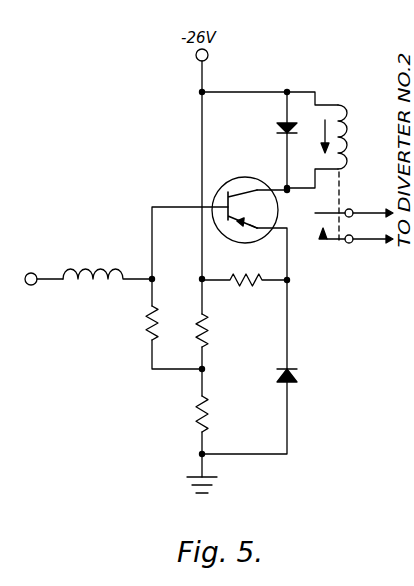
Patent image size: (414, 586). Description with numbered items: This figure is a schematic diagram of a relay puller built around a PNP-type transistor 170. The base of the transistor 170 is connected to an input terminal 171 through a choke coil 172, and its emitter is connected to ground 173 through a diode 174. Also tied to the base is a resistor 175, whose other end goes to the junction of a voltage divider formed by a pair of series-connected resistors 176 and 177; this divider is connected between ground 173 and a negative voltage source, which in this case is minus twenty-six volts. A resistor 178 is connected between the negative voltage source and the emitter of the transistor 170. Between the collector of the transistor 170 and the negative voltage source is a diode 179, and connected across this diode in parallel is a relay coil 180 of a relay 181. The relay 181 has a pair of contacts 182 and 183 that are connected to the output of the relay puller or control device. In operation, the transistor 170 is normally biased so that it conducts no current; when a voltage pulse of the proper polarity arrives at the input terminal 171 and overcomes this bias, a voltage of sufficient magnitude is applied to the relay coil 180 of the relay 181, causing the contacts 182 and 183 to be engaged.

The transistor 170 is at (237, 178).
The input terminal 171 is at (32, 272).
The choke coil 172 is at (99, 270).
The ground 173 is at (216, 478).
The diode 174 is at (294, 370).
The resistor 175 is at (146, 335).
The resistor 176 is at (209, 329).
The resistor 177 is at (209, 412).
The resistor 178 is at (236, 281).
The diode 179 is at (283, 125).
The relay coil 180 is at (348, 128).
The relay 181 is at (363, 100).
The contact 182 is at (352, 208).
The contact 183 is at (351, 244).